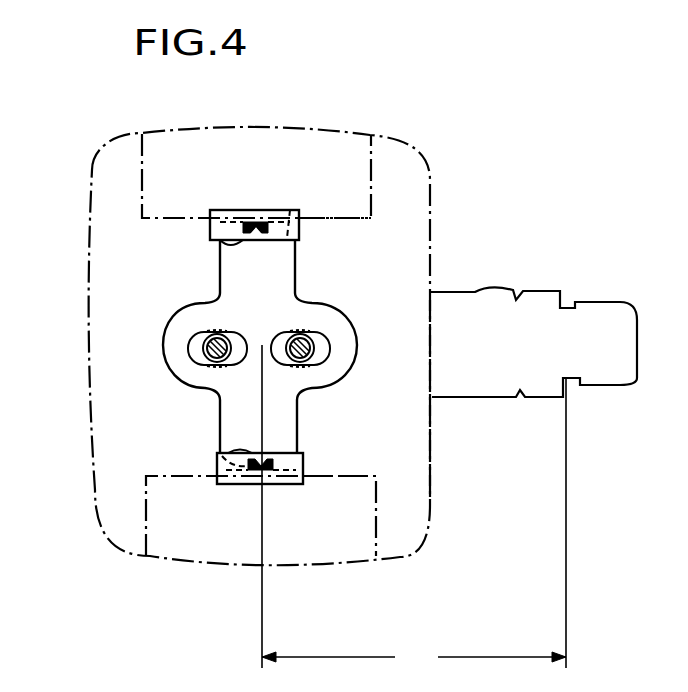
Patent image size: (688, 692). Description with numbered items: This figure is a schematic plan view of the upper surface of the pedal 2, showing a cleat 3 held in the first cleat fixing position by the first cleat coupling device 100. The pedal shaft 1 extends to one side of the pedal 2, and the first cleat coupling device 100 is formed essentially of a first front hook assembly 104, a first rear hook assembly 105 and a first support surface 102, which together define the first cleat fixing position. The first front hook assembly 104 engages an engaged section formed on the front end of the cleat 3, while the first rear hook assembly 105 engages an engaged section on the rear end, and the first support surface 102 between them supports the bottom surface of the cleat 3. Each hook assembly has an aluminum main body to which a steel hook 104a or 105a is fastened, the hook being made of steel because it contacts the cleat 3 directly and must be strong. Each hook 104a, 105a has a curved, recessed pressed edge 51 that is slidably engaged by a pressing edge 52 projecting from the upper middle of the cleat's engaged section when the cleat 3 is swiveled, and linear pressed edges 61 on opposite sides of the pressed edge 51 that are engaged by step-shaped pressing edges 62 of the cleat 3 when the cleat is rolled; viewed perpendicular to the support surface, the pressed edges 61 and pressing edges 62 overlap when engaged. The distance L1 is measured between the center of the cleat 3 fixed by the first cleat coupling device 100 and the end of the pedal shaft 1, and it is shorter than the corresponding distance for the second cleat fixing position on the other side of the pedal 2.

The pedal shaft 1 is at (605, 302).
The pedal 2 is at (422, 164).
The cleat 3 is at (158, 348).
The pressed edge 51 is at (258, 234).
The pressing edge 52 is at (252, 220).
The pressed edges 61 is at (220, 241).
The pressing edges 62 is at (290, 210).
The first cleat coupling device 100 is at (192, 346).
The first support surface 102 is at (405, 400).
The first front hook assembly 104 is at (292, 128).
The hook 104a is at (300, 226).
The first rear hook assembly 105 is at (352, 560).
The hook 105a is at (306, 468).
The distance L1 is at (414, 508).